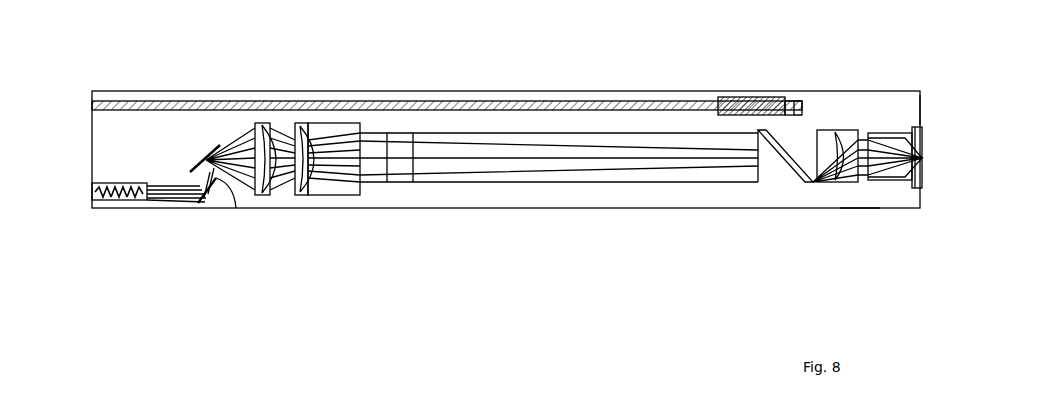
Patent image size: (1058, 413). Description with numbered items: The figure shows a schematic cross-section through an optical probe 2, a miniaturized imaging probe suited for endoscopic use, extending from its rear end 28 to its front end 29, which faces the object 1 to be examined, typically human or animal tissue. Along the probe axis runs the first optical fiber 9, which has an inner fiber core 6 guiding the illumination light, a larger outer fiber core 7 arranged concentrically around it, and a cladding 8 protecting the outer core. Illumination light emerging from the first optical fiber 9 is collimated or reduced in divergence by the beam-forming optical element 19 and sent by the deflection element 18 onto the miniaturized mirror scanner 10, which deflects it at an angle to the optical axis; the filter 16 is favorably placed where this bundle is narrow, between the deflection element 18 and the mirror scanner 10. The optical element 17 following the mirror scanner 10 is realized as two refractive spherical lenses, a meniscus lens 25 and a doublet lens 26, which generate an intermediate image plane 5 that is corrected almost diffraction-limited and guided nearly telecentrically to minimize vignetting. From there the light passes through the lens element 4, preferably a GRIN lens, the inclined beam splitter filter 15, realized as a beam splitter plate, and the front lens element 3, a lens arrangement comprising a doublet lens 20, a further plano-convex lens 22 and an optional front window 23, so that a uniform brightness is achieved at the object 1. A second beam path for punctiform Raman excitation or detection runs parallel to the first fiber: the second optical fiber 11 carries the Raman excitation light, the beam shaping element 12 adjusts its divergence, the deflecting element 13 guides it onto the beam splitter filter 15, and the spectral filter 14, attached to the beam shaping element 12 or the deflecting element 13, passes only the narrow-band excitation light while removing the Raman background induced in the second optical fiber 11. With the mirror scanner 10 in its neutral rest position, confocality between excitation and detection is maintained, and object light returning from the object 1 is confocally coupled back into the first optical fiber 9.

The object 1 is at (928, 166).
The optical probe 2 is at (860, 208).
The front lens element 3 is at (871, 100).
The lens element 4 is at (622, 208).
The intermediate image plane 5 is at (413, 195).
The inner fiber core 6 is at (108, 210).
The outer fiber core 7 is at (120, 210).
The cladding 8 is at (134, 210).
The first optical fiber 9 is at (136, 263).
The mirror scanner 10 is at (218, 148).
The second optical fiber 11 is at (490, 101).
The beam shaping element 12 is at (740, 97).
The deflecting element 13 is at (789, 115).
The spectral filter 14 is at (800, 115).
The beam splitter filter 15 is at (797, 208).
The filter 16 is at (233, 210).
The optical element 17 is at (309, 105).
The deflection element 18 is at (210, 210).
The beam-forming optical element 19 is at (190, 210).
The doublet lens 20 is at (835, 130).
The plano-convex lens 22 is at (888, 133).
The front window 23 is at (895, 115).
The meniscus lens 25 is at (262, 123).
The doublet lens 26 is at (329, 124).
The rear end 28 is at (92, 122).
The front end 29 is at (920, 112).